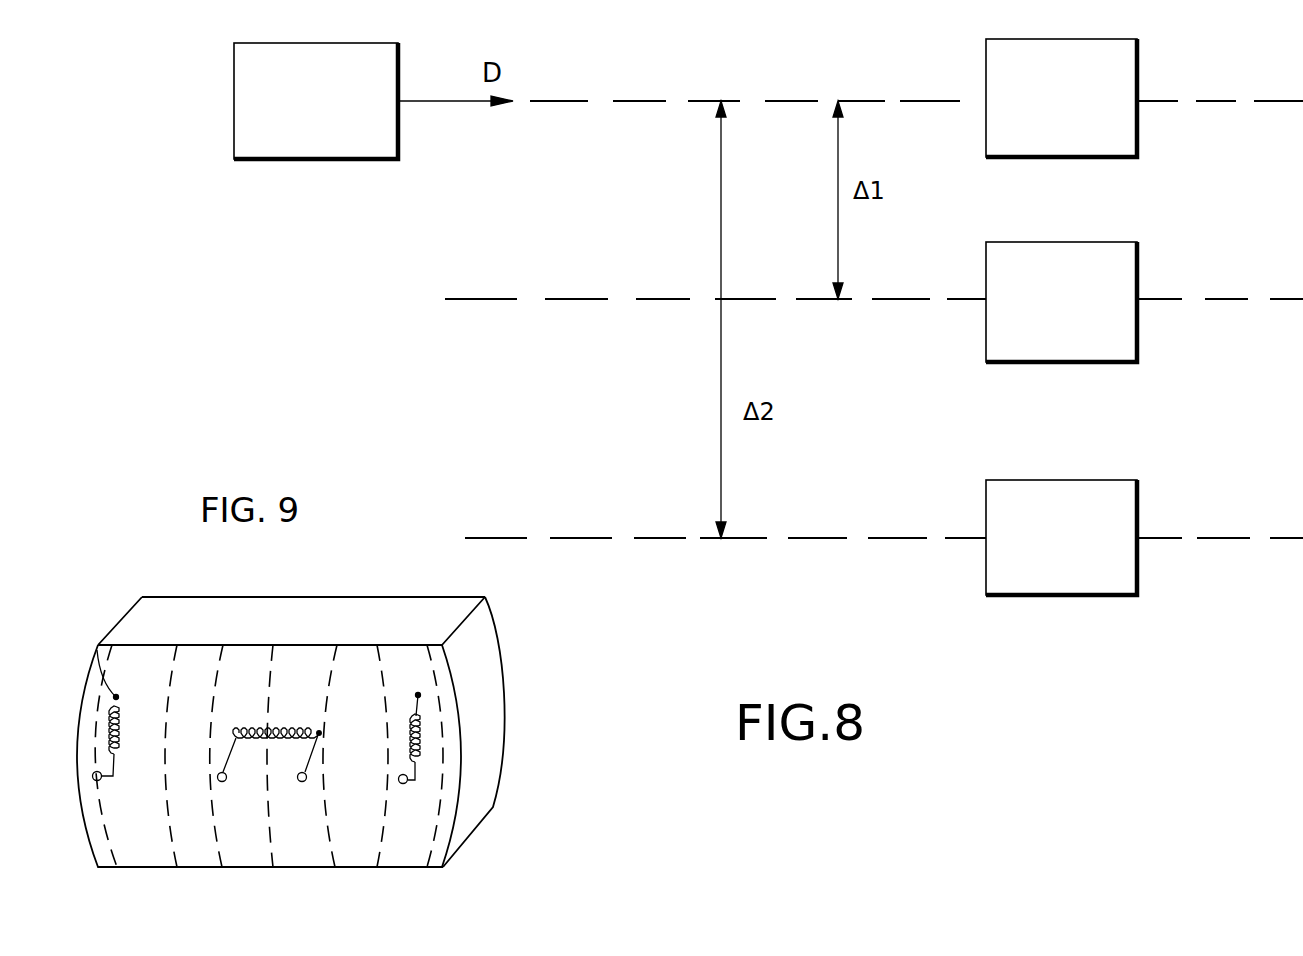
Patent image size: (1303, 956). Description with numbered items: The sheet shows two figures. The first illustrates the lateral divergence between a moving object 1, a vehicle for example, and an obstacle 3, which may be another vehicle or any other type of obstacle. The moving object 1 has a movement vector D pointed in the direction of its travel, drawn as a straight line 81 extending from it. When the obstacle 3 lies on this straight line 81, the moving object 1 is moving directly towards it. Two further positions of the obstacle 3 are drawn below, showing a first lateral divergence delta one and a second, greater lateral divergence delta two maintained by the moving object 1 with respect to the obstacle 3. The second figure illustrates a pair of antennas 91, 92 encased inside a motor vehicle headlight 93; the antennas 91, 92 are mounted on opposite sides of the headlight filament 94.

In FIG. 8, the moving object 1 is at (343, 44).
In FIG. 8, the obstacle 3 is at (1065, 40).
In FIG. 8, the straight line 81 is at (1223, 100).
In FIG. 9, the antenna 91 is at (428, 723).
In FIG. 9, the antenna 92 is at (98, 645).
In FIG. 9, the motor vehicle headlight 93 is at (340, 605).
In FIG. 9, the headlight filament 94 is at (248, 727).